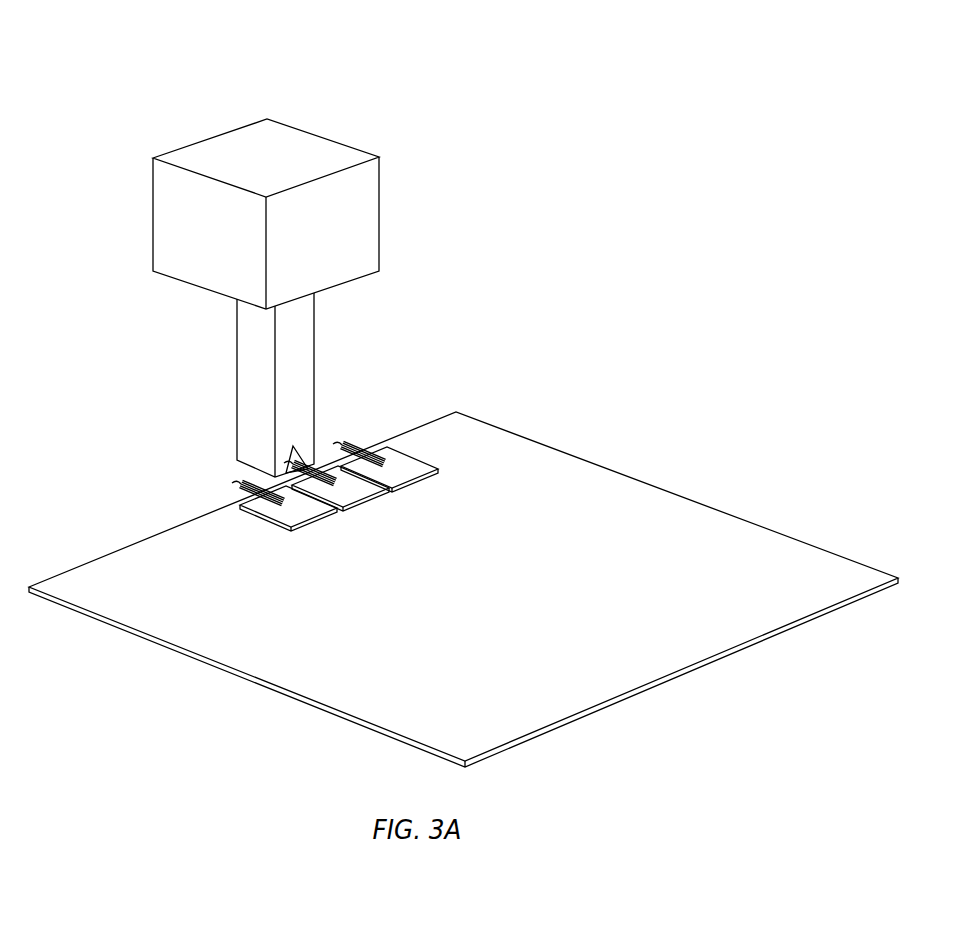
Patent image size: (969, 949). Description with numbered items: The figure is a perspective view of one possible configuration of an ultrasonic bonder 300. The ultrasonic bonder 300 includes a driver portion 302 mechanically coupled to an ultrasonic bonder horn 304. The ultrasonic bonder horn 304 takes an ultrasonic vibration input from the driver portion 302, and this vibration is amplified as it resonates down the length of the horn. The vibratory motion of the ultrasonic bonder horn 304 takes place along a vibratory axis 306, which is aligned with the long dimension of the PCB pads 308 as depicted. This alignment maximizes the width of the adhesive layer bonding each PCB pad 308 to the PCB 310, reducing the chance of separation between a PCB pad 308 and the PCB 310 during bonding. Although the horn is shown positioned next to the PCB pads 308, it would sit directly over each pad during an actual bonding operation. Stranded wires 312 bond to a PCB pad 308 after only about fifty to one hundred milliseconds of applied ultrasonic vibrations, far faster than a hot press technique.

The ultrasonic bonder 300 is at (176, 118).
The driver portion 302 is at (199, 253).
The ultrasonic bonder horn 304 is at (228, 378).
The vibratory axis 306 is at (263, 451).
The PCB pad 308 is at (327, 523).
The PCB 310 is at (727, 585).
The stranded wires 312 is at (235, 487).